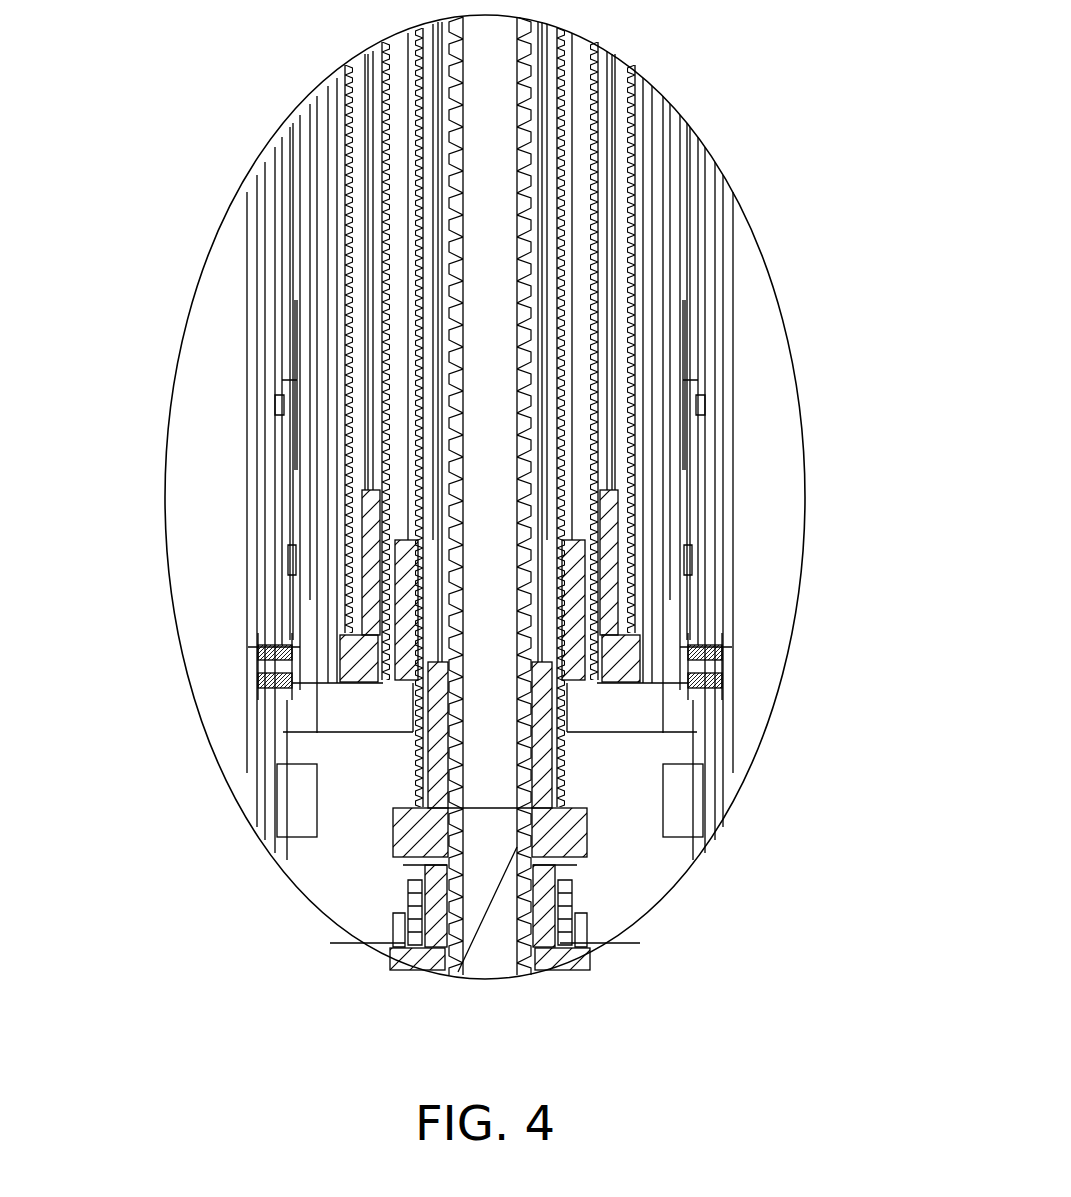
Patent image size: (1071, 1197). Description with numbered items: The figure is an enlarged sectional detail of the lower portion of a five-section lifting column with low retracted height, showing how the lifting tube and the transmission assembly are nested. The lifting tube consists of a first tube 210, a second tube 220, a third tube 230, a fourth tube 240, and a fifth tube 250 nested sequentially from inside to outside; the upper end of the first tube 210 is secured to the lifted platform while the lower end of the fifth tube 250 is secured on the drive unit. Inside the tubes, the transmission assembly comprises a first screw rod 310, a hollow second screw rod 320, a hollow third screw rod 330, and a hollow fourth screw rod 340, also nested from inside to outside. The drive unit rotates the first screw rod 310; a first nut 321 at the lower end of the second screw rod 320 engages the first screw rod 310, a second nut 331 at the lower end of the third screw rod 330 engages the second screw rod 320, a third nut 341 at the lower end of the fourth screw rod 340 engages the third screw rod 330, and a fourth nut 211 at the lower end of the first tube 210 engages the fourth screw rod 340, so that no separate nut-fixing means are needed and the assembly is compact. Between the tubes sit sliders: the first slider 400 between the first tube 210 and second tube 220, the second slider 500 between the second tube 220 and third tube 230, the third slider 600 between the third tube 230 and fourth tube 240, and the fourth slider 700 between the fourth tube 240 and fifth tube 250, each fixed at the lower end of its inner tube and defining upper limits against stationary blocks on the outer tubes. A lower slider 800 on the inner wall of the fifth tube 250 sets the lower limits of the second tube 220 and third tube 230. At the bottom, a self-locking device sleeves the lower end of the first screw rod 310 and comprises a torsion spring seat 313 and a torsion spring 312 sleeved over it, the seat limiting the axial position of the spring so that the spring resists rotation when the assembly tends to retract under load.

The first tube 210 is at (648, 547).
The fourth nut 211 is at (605, 563).
The second tube 220 is at (675, 432).
The third tube 230 is at (692, 335).
The fourth tube 240 is at (710, 283).
The fifth tube 250 is at (727, 243).
The first screw rod 310 is at (493, 556).
The torsion spring 312 is at (413, 893).
The torsion spring seat 313 is at (432, 912).
The second screw rod 320 is at (425, 487).
The first nut 321 is at (555, 823).
The third screw rod 330 is at (398, 435).
The second nut 331 is at (583, 683).
The fourth screw rod 340 is at (360, 388).
The third nut 341 is at (590, 625).
The first slider 400 is at (665, 495).
The second slider 500 is at (683, 365).
The third slider 600 is at (698, 405).
The fourth slider 700 is at (688, 560).
The lower slider 800 is at (258, 658).